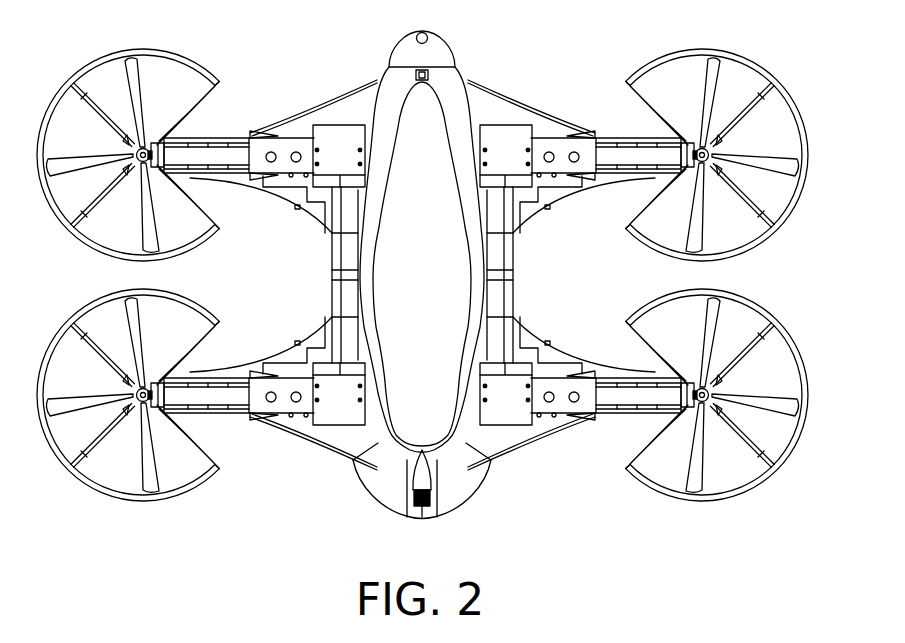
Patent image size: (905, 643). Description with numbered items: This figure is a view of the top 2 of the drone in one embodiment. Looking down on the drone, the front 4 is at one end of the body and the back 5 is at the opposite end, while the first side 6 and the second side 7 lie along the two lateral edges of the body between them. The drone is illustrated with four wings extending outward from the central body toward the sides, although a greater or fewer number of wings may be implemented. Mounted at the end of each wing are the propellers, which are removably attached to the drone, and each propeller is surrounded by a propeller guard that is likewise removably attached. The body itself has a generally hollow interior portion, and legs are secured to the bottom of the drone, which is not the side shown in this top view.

The top 2 is at (465, 105).
The front 4 is at (436, 35).
The back 5 is at (472, 498).
The first side 6 is at (511, 276).
The second side 7 is at (337, 288).